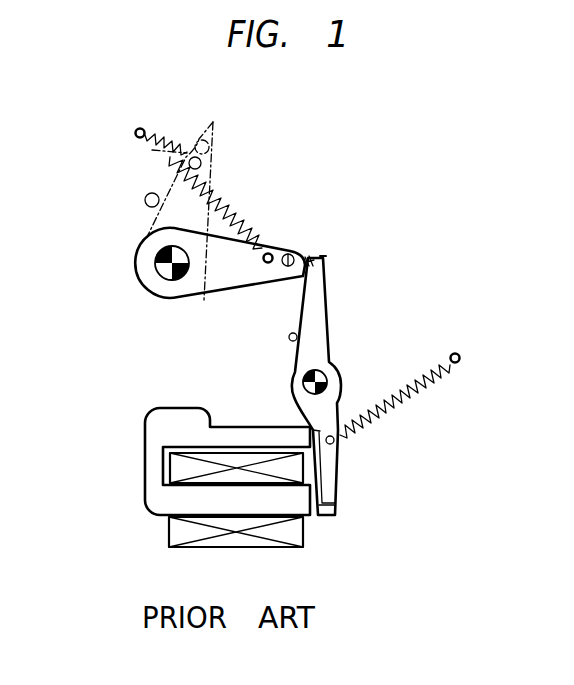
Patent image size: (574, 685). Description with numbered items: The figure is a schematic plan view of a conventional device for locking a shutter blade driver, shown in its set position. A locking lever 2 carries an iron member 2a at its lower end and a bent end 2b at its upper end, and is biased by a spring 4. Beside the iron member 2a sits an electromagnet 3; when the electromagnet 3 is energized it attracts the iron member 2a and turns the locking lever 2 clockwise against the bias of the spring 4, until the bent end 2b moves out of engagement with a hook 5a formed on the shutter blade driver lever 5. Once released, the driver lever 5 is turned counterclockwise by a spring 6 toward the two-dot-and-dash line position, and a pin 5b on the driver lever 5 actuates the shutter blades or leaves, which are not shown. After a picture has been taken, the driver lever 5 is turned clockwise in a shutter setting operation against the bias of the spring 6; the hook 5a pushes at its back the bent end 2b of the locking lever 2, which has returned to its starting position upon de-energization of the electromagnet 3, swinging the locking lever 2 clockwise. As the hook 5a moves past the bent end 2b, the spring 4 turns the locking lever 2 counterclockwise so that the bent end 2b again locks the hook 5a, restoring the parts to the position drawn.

The locking lever 2 is at (318, 333).
The iron member 2a is at (338, 503).
The bent end 2b is at (320, 256).
The electromagnet 3 is at (146, 522).
The spring 4 is at (392, 405).
The shutter blade driver lever 5 is at (224, 272).
The hook 5a is at (306, 253).
The pin 5b is at (287, 252).
The spring 6 is at (226, 208).